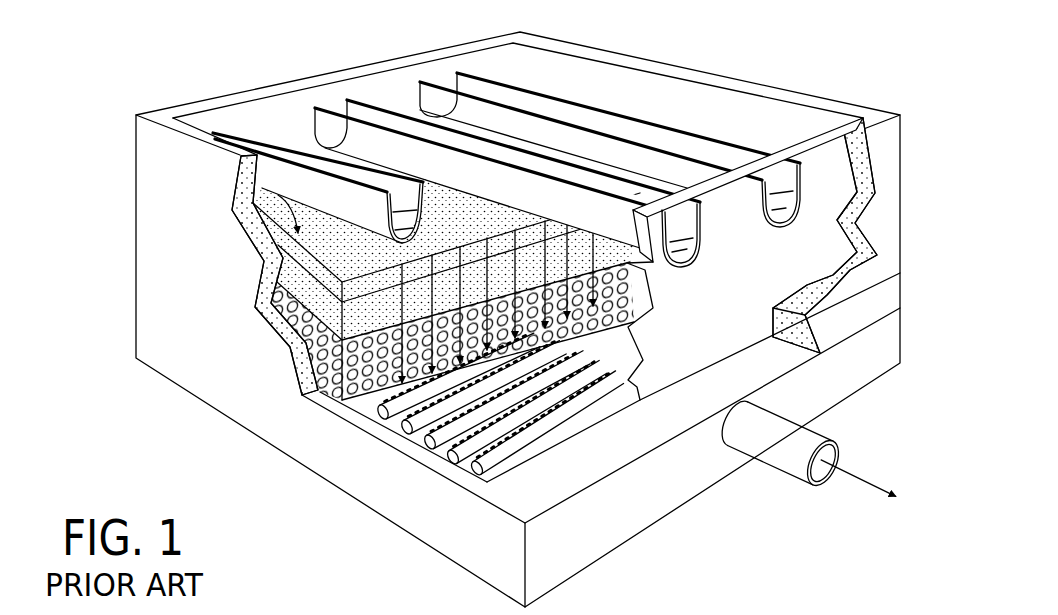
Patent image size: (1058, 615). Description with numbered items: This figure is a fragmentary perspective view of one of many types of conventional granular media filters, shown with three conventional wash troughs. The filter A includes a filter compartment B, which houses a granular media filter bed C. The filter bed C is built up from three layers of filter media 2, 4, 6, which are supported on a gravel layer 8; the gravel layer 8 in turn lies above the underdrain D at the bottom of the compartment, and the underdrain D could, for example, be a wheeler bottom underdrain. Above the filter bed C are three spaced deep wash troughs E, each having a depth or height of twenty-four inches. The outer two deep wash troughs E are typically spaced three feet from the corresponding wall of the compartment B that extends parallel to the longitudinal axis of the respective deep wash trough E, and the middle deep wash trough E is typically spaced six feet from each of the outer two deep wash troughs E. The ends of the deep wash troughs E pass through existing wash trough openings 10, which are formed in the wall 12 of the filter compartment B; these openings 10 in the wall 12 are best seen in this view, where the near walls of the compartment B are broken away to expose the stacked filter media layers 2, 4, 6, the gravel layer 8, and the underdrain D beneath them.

The filter A is at (677, 55).
The filter compartment B is at (345, 72).
The granular media filter bed C is at (245, 197).
The deep wash troughs E is at (267, 133).
The layer of filter media 2 is at (263, 270).
The layer of filter media 4 is at (265, 300).
The layer of filter media 6 is at (302, 386).
The gravel layer 8 is at (328, 400).
The wash trough openings 10 is at (774, 228).
The wall 12 is at (708, 343).
The underdrain D is at (423, 445).